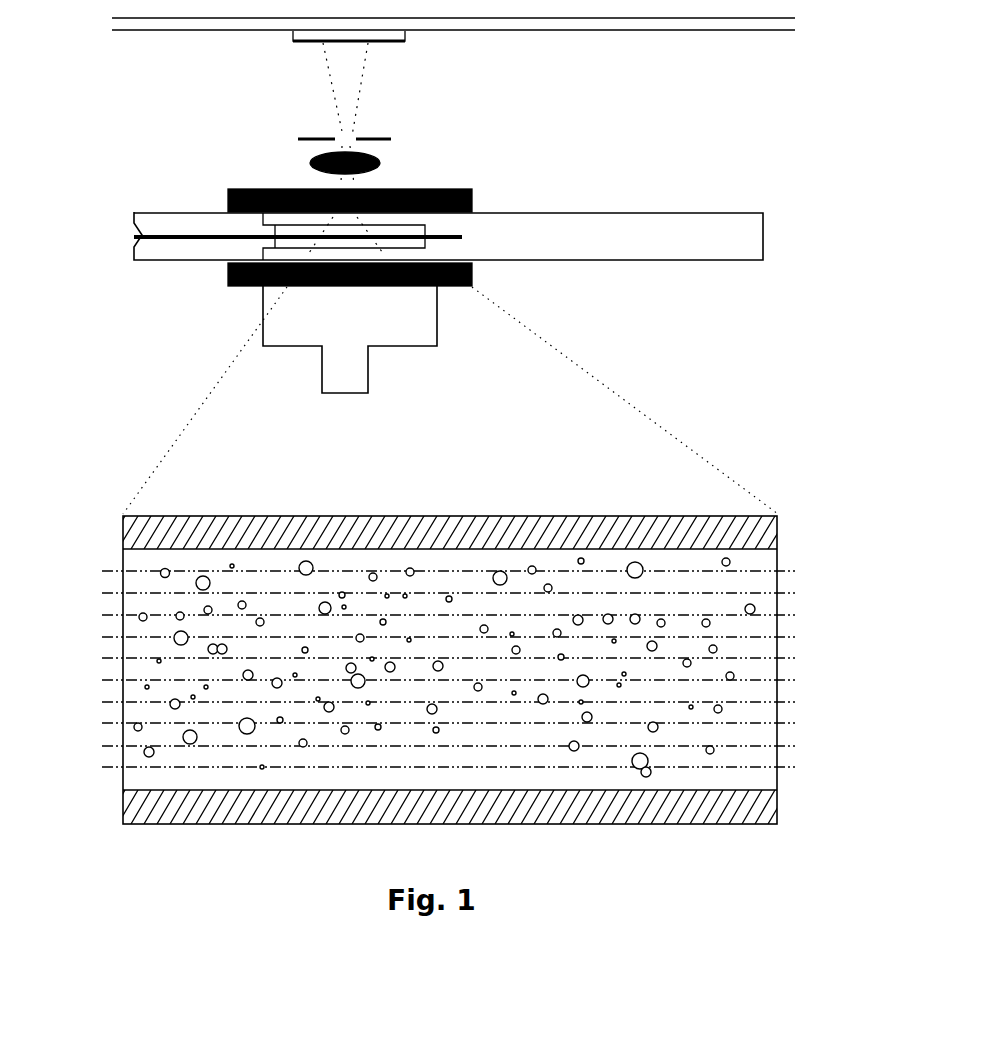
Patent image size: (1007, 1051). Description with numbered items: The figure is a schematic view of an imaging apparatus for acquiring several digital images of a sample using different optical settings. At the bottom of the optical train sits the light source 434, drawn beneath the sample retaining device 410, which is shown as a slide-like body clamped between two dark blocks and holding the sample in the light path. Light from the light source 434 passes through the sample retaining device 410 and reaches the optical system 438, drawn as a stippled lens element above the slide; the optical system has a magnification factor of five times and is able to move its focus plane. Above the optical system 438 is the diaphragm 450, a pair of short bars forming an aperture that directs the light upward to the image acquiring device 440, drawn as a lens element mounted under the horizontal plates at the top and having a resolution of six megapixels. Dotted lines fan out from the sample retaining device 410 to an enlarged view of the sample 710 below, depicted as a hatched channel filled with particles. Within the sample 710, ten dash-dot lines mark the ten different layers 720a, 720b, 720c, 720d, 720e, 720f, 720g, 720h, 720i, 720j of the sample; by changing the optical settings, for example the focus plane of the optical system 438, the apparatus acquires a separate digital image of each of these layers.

The sample retaining device 410 is at (764, 233).
The light source 434 is at (440, 323).
The optical system 438 is at (376, 157).
The image acquiring device 440 is at (300, 34).
The diaphragm 450 is at (298, 139).
The sample 710 is at (797, 504).
The layer of the sample 720a is at (102, 572).
The layer of the sample 720b is at (795, 591).
The layer of the sample 720c is at (102, 614).
The layer of the sample 720d is at (795, 637).
The layer of the sample 720e is at (103, 658).
The layer of the sample 720f is at (791, 672).
The layer of the sample 720g is at (102, 702).
The layer of the sample 720h is at (794, 723).
The layer of the sample 720i is at (102, 746).
The layer of the sample 720j is at (795, 768).